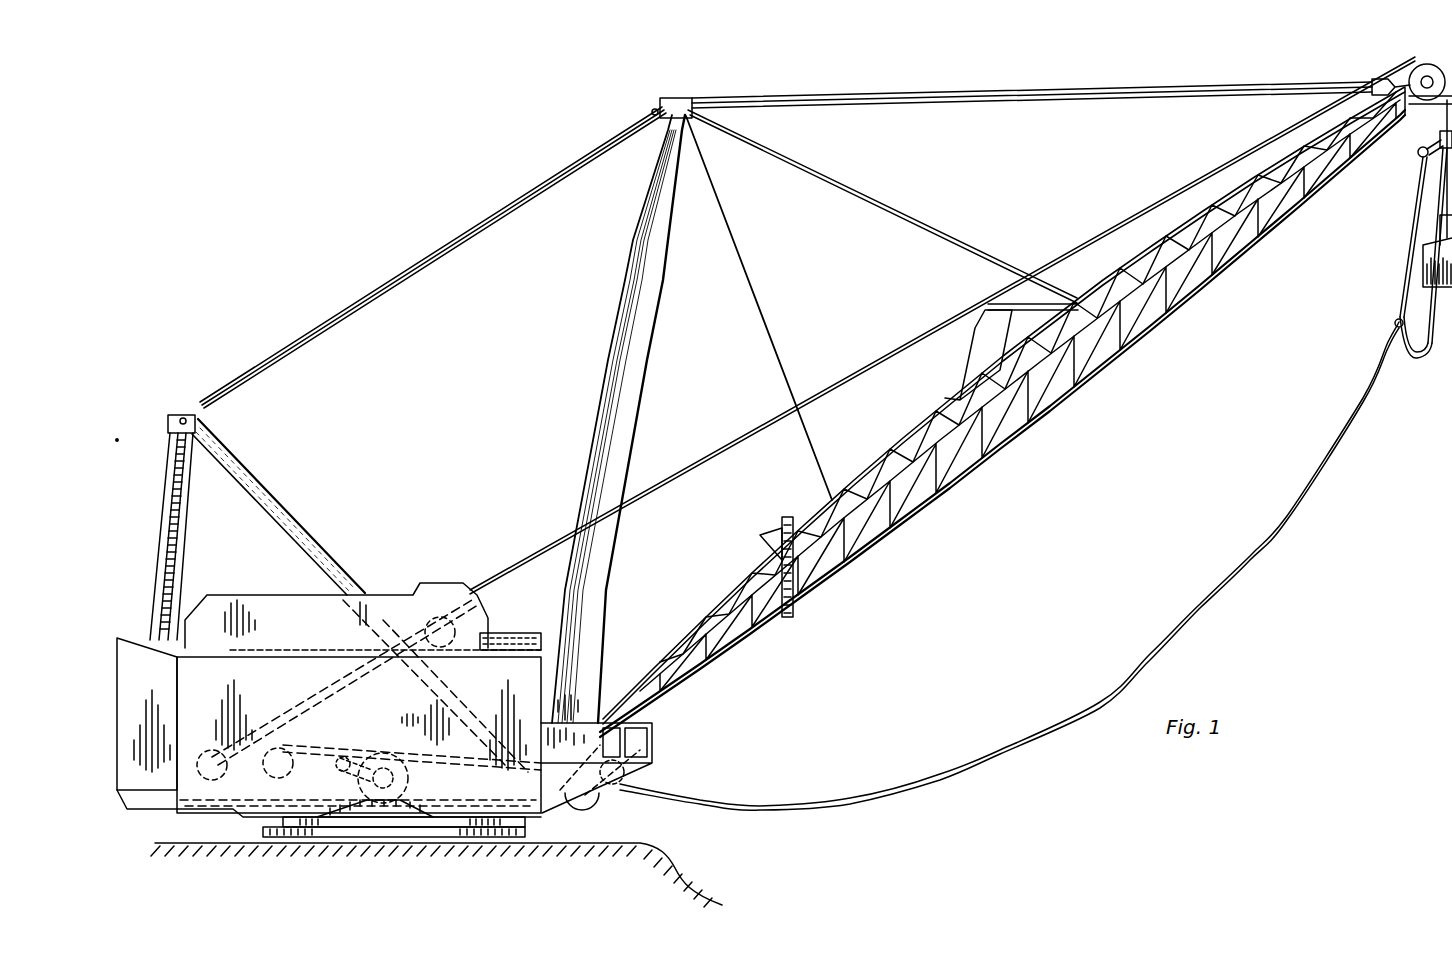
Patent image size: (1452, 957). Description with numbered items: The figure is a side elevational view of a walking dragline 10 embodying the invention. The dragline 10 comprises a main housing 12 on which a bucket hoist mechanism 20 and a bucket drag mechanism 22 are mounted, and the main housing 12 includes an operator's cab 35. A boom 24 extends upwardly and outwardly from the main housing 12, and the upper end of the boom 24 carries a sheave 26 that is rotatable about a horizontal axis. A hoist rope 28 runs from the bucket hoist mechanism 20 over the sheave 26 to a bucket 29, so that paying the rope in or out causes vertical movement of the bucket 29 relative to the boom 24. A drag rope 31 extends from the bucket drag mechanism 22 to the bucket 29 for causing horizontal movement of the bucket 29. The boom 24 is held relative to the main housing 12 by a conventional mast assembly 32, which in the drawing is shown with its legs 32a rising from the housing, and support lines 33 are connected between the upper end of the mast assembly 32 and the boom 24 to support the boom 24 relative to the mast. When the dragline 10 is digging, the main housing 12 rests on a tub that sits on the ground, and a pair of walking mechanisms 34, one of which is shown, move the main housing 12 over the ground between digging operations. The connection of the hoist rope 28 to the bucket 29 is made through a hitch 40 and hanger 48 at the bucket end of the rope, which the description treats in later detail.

The walking dragline 10 is at (334, 278).
The main housing 12 is at (278, 683).
The bucket hoist mechanism 20 is at (197, 766).
The bucket drag mechanism 22 is at (283, 748).
The boom 24 is at (932, 509).
The sheave 26 is at (1419, 66).
The hoist rope 28 is at (878, 362).
The bucket 29 is at (1447, 220).
The drag rope 31 is at (1196, 612).
The mast assembly 32 is at (600, 398).
The gantry legs 32a is at (259, 508).
The support lines 33 is at (438, 266).
The walking mechanisms 34 is at (302, 841).
The operator's cab 35 is at (652, 752).
The hoist hitch 40 is at (1412, 150).
The hanger 48 is at (1404, 268).